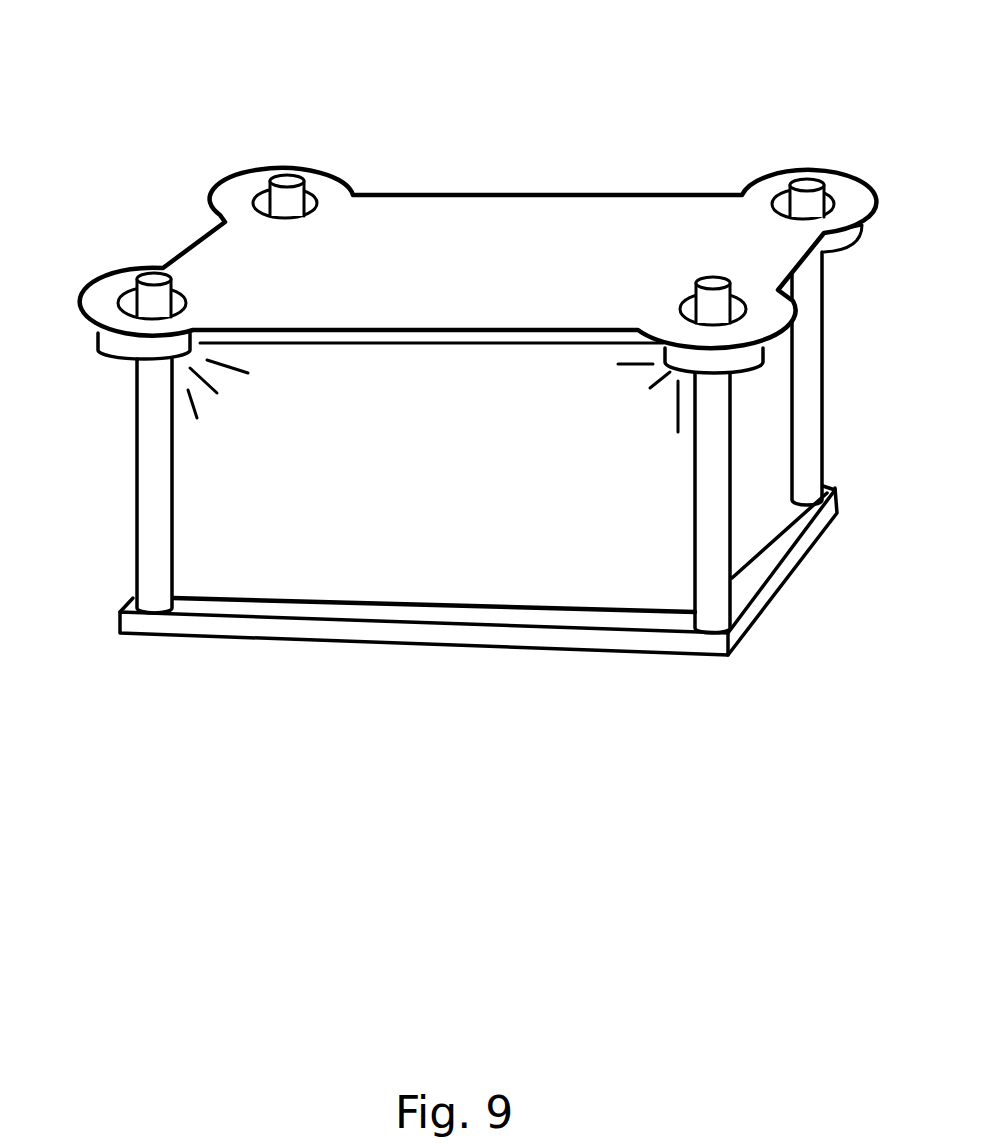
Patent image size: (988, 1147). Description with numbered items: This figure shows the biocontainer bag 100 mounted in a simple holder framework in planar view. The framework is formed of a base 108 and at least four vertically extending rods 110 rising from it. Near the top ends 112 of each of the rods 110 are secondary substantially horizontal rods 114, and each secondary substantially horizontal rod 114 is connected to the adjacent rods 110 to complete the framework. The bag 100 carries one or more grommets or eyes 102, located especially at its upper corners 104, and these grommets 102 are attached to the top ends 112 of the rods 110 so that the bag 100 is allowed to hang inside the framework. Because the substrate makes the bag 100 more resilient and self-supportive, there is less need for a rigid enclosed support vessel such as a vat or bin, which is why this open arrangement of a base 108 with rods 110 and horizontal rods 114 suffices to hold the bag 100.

The bag 100 is at (333, 485).
The grommets 102 is at (686, 295).
The upper corners 104 is at (777, 318).
The base 108 is at (442, 638).
The vertically extending rods 110 is at (710, 618).
The top ends 112 is at (807, 183).
The secondary substantially horizontal rods 114 is at (450, 238).